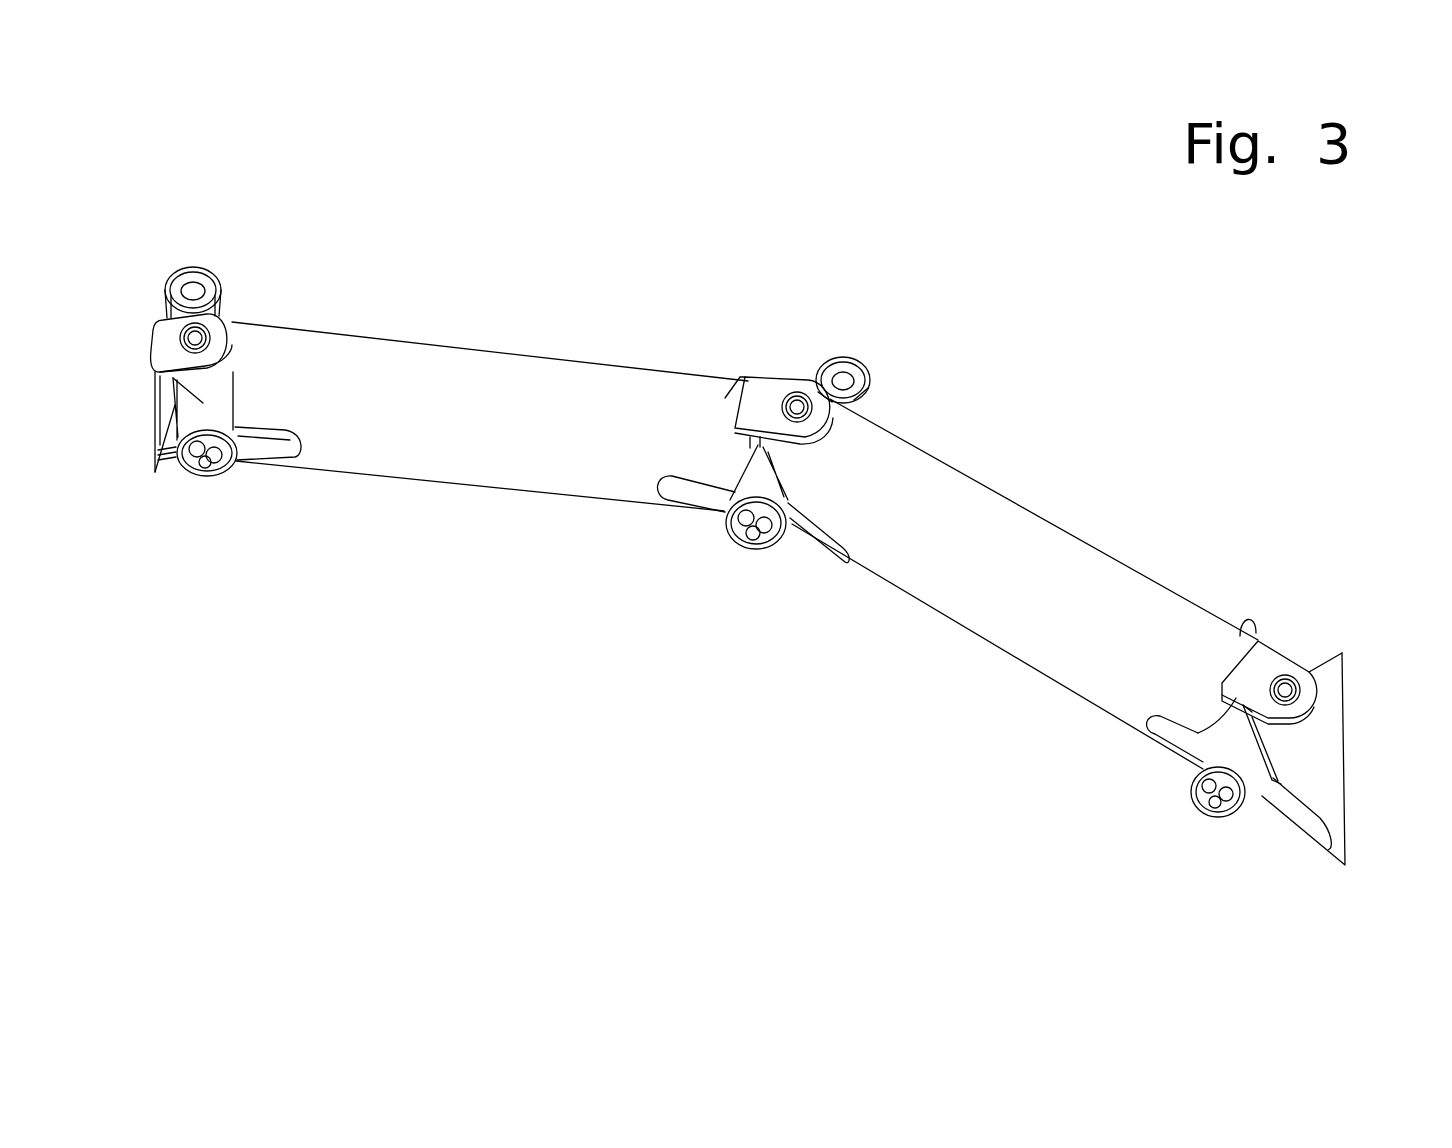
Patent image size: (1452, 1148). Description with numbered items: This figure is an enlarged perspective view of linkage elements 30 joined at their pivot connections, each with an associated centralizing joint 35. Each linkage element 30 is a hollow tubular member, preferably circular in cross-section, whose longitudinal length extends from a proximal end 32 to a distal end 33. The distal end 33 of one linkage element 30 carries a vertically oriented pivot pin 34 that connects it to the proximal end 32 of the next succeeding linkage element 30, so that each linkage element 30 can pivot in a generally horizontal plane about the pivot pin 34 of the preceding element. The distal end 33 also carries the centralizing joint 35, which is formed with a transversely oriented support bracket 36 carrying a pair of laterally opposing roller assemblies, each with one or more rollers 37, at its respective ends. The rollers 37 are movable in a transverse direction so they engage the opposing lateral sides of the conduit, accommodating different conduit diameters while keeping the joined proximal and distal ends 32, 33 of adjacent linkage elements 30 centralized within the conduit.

The linkage element 30 is at (455, 362).
The proximal end 32 is at (724, 400).
The distal end 33 is at (240, 320).
The pivot pin 34 is at (206, 341).
The centralizing joint 35 is at (180, 226).
The support bracket 36 is at (215, 418).
The roller 37 is at (205, 264).